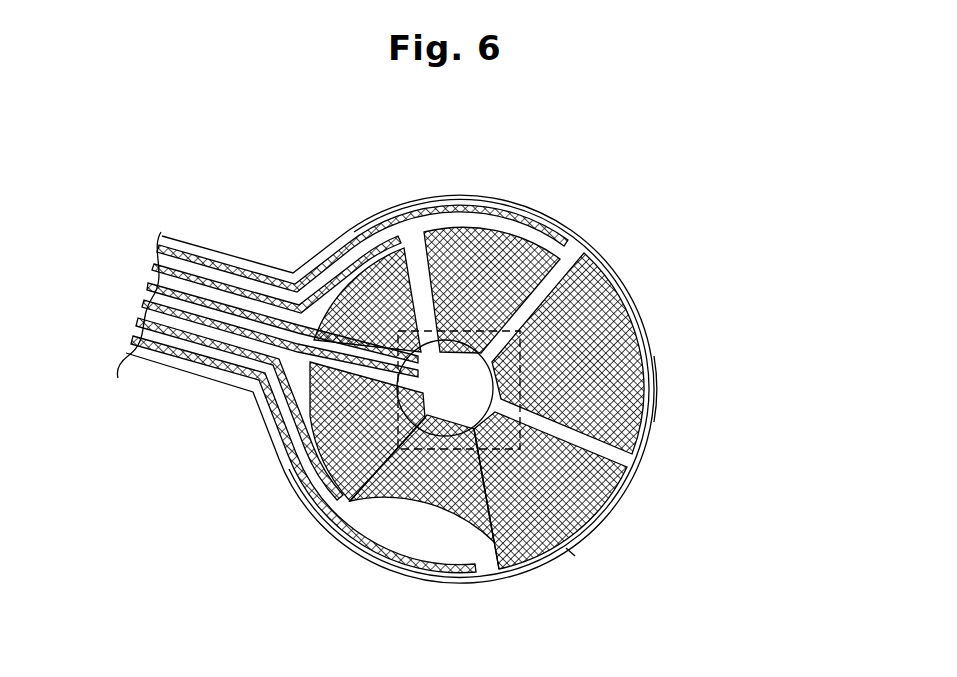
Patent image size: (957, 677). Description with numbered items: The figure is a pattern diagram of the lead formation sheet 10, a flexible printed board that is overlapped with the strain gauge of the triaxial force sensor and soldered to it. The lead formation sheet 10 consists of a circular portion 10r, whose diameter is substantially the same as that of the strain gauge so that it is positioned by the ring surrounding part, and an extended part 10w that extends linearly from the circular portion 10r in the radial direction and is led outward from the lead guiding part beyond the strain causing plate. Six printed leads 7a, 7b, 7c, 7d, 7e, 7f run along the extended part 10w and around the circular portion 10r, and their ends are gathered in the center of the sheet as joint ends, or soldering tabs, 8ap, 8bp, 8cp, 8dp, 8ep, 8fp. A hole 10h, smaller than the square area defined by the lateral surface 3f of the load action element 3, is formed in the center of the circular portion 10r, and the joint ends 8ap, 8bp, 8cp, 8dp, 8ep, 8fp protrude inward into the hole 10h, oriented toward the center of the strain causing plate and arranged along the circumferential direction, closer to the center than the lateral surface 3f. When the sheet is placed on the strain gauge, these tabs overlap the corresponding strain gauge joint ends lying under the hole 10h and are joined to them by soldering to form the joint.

The load action element 3 is at (562, 288).
The lateral surface of the load action element 3f is at (566, 548).
The printed lead 7a is at (222, 268).
The printed lead 7b is at (268, 298).
The printed lead 7c is at (200, 300).
The printed lead 7d is at (172, 308).
The printed lead 7e is at (150, 327).
The printed lead 7f is at (220, 365).
The joint end 8ap is at (628, 452).
The joint end 8bp is at (342, 482).
The joint end 8cp is at (398, 250).
The joint end 8dp is at (565, 278).
The joint end 8ep is at (488, 560).
The joint end 8fp is at (426, 548).
The lead formation sheet 10 is at (648, 342).
The hole 10h is at (606, 268).
The circular portion 10r is at (655, 392).
The extended part 10w is at (178, 368).